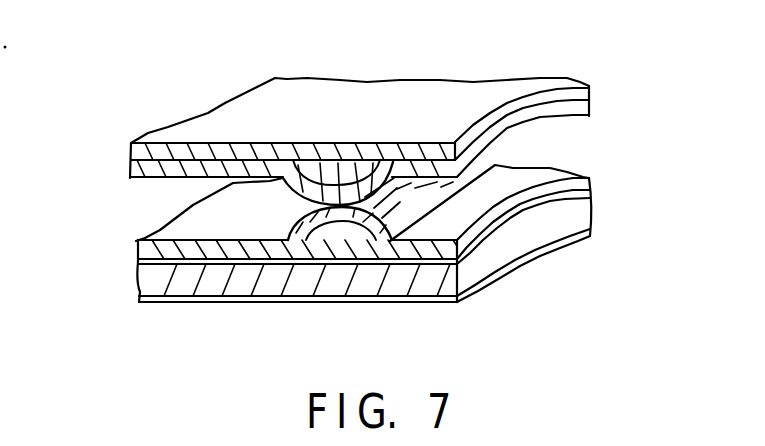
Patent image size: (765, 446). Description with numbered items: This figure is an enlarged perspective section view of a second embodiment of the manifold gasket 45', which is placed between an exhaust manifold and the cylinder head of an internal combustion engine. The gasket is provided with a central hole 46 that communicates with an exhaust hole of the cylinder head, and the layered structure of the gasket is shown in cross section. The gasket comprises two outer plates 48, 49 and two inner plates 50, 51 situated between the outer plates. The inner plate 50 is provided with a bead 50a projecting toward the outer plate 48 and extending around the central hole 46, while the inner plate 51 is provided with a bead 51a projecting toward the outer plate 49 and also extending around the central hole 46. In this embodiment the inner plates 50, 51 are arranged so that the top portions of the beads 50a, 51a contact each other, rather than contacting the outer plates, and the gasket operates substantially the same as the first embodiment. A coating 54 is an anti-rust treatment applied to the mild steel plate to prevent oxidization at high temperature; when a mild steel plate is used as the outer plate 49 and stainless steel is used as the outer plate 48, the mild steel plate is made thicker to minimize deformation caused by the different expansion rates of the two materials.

The manifold gasket 45' is at (346, 103).
The central hole 46 is at (561, 304).
The outer plate 48 is at (417, 157).
The inner plate 50 is at (175, 168).
The bead 50a is at (364, 196).
The inner plate 51 is at (276, 250).
The bead 51a is at (340, 218).
The outer plate 49 is at (158, 288).
The coating 54 is at (162, 257).